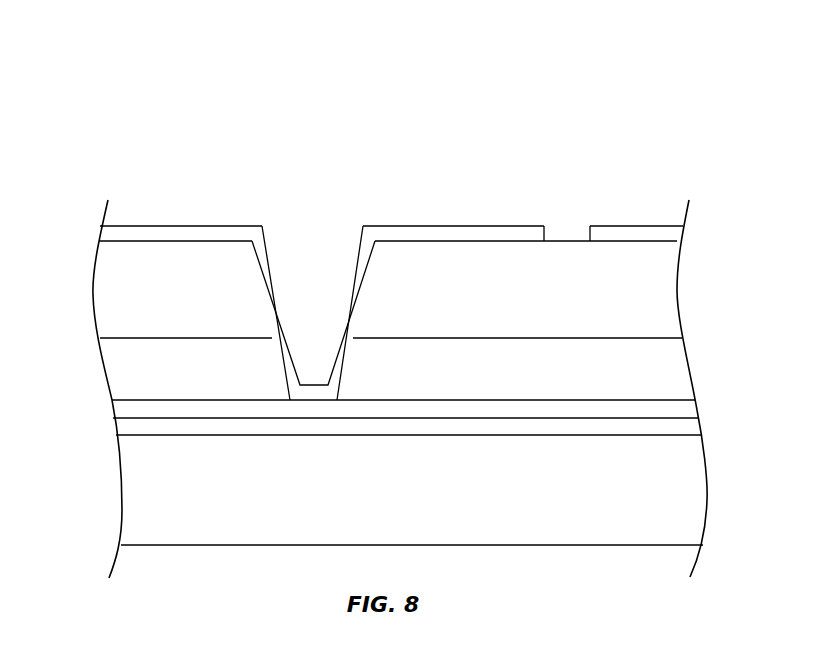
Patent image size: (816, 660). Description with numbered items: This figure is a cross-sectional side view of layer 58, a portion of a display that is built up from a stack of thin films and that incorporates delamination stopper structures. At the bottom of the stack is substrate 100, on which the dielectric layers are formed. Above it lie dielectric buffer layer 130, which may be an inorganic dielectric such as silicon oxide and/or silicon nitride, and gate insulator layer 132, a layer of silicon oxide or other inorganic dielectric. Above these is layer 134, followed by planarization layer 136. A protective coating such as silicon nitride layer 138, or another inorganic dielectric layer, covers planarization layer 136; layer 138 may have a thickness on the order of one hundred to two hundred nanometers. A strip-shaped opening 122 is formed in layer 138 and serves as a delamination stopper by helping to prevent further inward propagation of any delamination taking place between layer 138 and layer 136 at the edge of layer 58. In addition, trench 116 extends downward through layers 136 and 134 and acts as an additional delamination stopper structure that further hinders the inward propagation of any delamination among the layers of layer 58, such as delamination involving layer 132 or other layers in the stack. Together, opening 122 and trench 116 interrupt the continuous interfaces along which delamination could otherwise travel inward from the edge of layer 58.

The layer 58 is at (691, 85).
The substrate 100 is at (127, 490).
The dielectric buffer layer 130 is at (115, 428).
The gate insulator layer 132 is at (112, 408).
The barrier layer 134 is at (110, 372).
The planarization layer 136 is at (100, 292).
The silicon nitride layer 138 is at (174, 234).
The opening 122 is at (591, 218).
The trench 116 is at (314, 242).